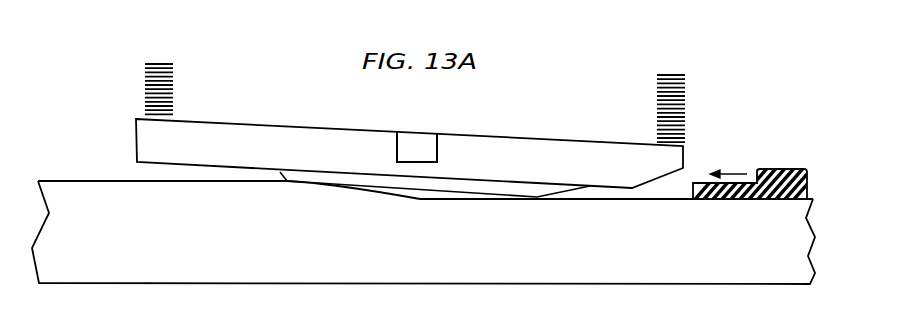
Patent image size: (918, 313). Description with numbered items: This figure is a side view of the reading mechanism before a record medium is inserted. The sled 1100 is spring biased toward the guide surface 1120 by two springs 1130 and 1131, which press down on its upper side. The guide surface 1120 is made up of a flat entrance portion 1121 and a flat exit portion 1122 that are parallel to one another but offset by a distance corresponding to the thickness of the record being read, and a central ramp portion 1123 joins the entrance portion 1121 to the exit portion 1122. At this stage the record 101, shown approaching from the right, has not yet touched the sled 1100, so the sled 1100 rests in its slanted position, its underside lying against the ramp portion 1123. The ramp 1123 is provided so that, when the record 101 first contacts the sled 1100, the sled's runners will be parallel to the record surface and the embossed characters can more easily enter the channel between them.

The record 101 is at (757, 200).
The sled 1100 is at (534, 171).
The guide surface 1120 is at (209, 270).
The entrance portion 1121 is at (628, 200).
The exit portion 1122 is at (135, 182).
The central ramp portion 1123 is at (327, 190).
The spring 1130 is at (173, 90).
The spring 1131 is at (658, 92).